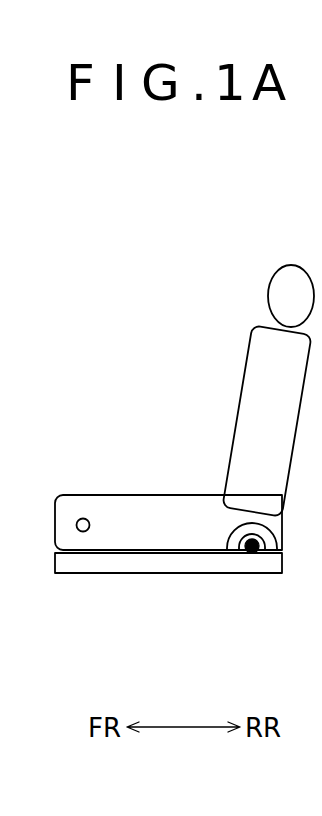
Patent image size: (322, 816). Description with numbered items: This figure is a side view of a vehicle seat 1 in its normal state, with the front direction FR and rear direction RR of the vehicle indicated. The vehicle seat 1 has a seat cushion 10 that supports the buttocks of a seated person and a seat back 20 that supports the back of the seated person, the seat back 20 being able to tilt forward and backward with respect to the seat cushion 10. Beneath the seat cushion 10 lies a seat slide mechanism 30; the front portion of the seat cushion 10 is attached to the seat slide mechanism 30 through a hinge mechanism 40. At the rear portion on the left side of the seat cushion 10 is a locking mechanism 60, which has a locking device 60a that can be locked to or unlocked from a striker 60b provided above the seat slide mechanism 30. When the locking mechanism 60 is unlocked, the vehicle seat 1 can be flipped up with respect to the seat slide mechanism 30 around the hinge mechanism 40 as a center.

The vehicle seat 1 is at (179, 208).
The seat cushion 10 is at (110, 495).
The seat back 20 is at (248, 363).
The seat slide mechanism 30 is at (157, 574).
The hinge mechanism 40 is at (81, 532).
The locking mechanism 60 is at (258, 603).
The locking device 60a is at (267, 553).
The striker 60b is at (250, 553).